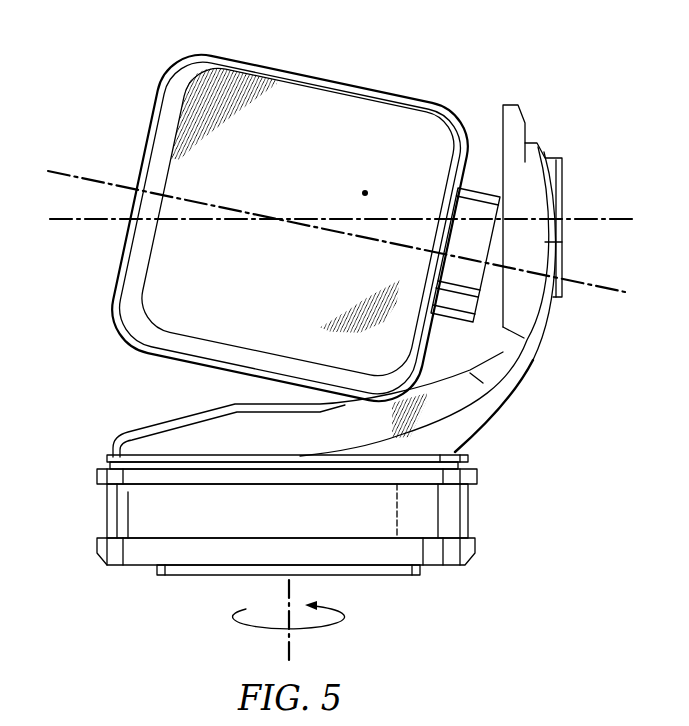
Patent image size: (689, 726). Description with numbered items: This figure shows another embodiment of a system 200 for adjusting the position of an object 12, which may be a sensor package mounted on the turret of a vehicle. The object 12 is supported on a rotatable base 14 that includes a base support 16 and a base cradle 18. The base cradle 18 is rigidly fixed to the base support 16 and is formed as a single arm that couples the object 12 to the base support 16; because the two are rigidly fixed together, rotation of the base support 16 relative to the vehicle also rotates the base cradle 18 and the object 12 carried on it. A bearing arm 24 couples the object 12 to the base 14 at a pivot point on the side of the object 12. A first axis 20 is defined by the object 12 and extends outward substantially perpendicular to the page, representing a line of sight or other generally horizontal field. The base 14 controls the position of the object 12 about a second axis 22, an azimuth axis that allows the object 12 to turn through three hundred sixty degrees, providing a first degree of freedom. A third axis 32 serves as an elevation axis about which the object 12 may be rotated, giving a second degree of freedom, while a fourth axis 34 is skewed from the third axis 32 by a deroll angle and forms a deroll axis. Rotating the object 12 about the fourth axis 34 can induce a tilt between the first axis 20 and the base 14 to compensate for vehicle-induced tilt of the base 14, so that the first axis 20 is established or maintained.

The system 200 is at (558, 79).
The object 12 is at (296, 278).
The base 14 is at (500, 451).
The base support 16 is at (469, 510).
The base cradle 18 is at (517, 394).
The first axis 20 is at (364, 186).
The second axis 22 is at (288, 641).
The bearing arm 24 is at (443, 318).
The third axis 32 is at (614, 294).
The fourth axis 34 is at (616, 217).